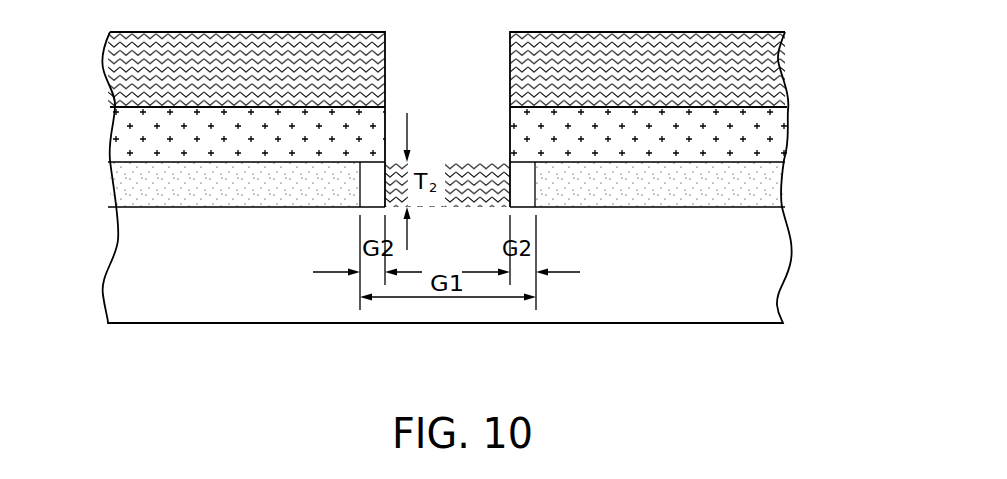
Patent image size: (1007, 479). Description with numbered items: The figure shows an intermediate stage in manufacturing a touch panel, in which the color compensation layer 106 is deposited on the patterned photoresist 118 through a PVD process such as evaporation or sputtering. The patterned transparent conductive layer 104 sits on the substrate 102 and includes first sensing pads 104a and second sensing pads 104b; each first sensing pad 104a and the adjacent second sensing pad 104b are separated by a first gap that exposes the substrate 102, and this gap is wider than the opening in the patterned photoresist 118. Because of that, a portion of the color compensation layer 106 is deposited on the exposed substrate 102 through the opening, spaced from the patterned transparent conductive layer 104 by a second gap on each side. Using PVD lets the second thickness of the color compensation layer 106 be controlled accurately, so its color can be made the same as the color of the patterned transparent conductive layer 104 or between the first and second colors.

The substrate 102 is at (757, 272).
The patterned transparent conductive layer 104 is at (446, 265).
The first sensing pads 104a is at (665, 192).
The second sensing pads 104b is at (262, 192).
The color compensation layer 106 is at (106, 62).
The patterned photoresist 118 is at (115, 129).